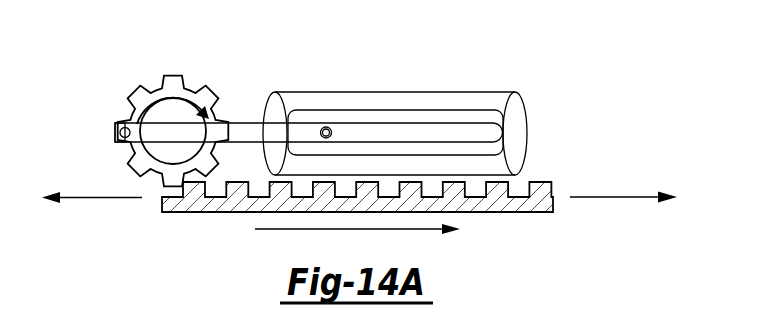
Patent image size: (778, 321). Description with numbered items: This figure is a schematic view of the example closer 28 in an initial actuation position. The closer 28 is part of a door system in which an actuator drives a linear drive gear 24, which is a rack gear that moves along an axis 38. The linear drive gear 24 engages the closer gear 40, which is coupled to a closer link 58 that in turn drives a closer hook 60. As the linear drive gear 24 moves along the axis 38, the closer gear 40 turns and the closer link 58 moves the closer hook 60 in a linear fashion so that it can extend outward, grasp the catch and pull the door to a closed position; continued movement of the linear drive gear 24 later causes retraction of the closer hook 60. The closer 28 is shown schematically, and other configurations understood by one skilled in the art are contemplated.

The linear drive gear 24 is at (215, 203).
The closer 28 is at (480, 66).
The axis 38 is at (90, 199).
The closer gear 40 is at (142, 91).
The closer link 58 is at (247, 129).
The closer hook 60 is at (408, 116).